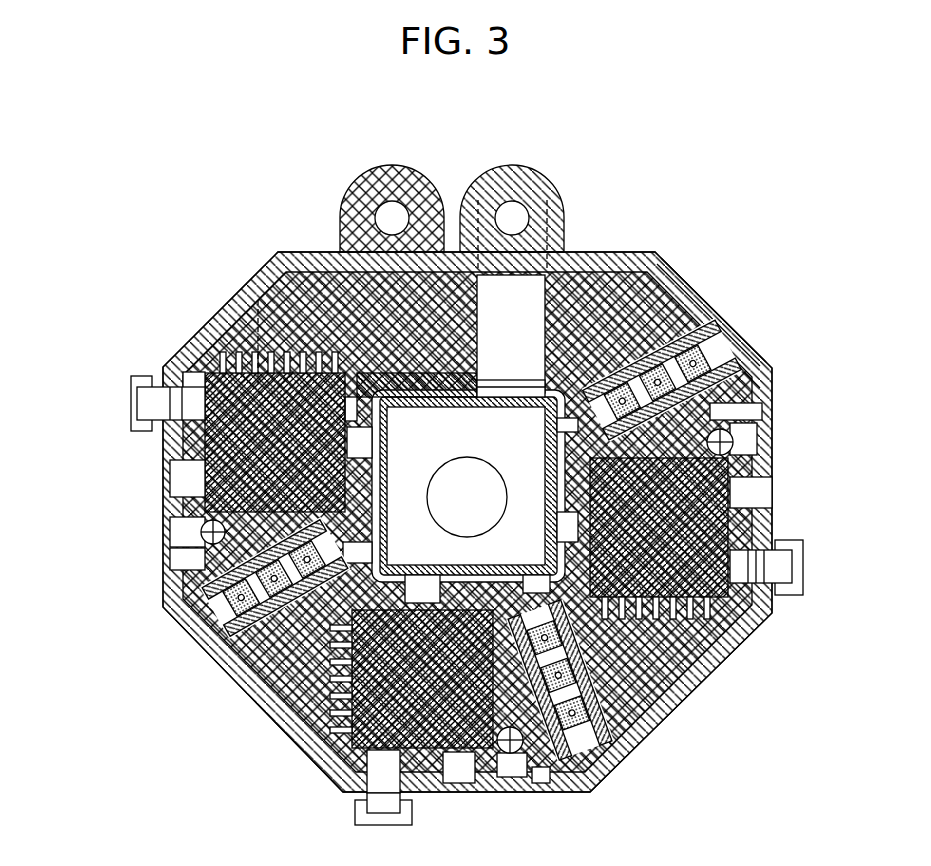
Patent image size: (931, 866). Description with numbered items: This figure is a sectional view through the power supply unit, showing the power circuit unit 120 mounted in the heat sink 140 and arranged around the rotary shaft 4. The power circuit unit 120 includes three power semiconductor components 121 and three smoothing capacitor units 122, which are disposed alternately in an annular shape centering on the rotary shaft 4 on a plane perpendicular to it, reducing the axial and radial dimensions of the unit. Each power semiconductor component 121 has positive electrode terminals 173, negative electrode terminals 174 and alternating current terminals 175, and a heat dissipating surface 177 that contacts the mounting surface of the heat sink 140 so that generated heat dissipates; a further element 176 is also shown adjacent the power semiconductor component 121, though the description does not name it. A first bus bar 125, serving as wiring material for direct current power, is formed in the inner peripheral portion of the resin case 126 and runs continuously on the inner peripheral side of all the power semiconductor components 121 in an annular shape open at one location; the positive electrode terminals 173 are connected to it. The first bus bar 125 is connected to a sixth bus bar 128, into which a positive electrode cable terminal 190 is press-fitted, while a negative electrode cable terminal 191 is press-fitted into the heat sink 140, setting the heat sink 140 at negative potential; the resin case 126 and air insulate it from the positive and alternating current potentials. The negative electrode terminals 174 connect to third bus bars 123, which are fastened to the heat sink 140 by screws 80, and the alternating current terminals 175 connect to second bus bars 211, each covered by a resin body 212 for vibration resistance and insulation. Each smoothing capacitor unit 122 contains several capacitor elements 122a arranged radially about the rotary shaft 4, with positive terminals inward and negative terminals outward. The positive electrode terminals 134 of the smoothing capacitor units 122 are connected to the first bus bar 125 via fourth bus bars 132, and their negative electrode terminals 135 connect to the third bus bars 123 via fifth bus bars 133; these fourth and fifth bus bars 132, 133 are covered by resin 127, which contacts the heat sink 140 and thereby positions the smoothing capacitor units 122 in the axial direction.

The rotary shaft 4 is at (497, 505).
The screws 80 is at (203, 532).
The power circuit unit 120 is at (720, 602).
The power semiconductor components 121 is at (228, 395).
The smoothing capacitor units 122 is at (712, 382).
The capacitor elements 122a is at (748, 378).
The third bus bars 123 is at (185, 542).
The first bus bar 125 is at (555, 400).
The resin case 126 is at (752, 352).
The resin 127 is at (663, 370).
The sixth bus bar 128 is at (537, 362).
The fourth bus bars 132 is at (225, 639).
The fifth bus bars 133 is at (200, 566).
The positive electrode terminals 134 is at (345, 570).
The negative electrode terminals 135 is at (286, 596).
The heat sink 140 is at (630, 320).
The positive electrode terminals 173 is at (352, 405).
The negative electrode terminals 174 is at (190, 483).
The alternating current terminals 175 is at (208, 378).
The coil pins 176 is at (248, 385).
The heat dissipating surface 177 is at (258, 298).
The positive electrode cable terminal 190 is at (512, 204).
The negative electrode cable terminal 191 is at (394, 204).
The second bus bars 211 is at (150, 402).
The resin bodies 212 is at (133, 388).